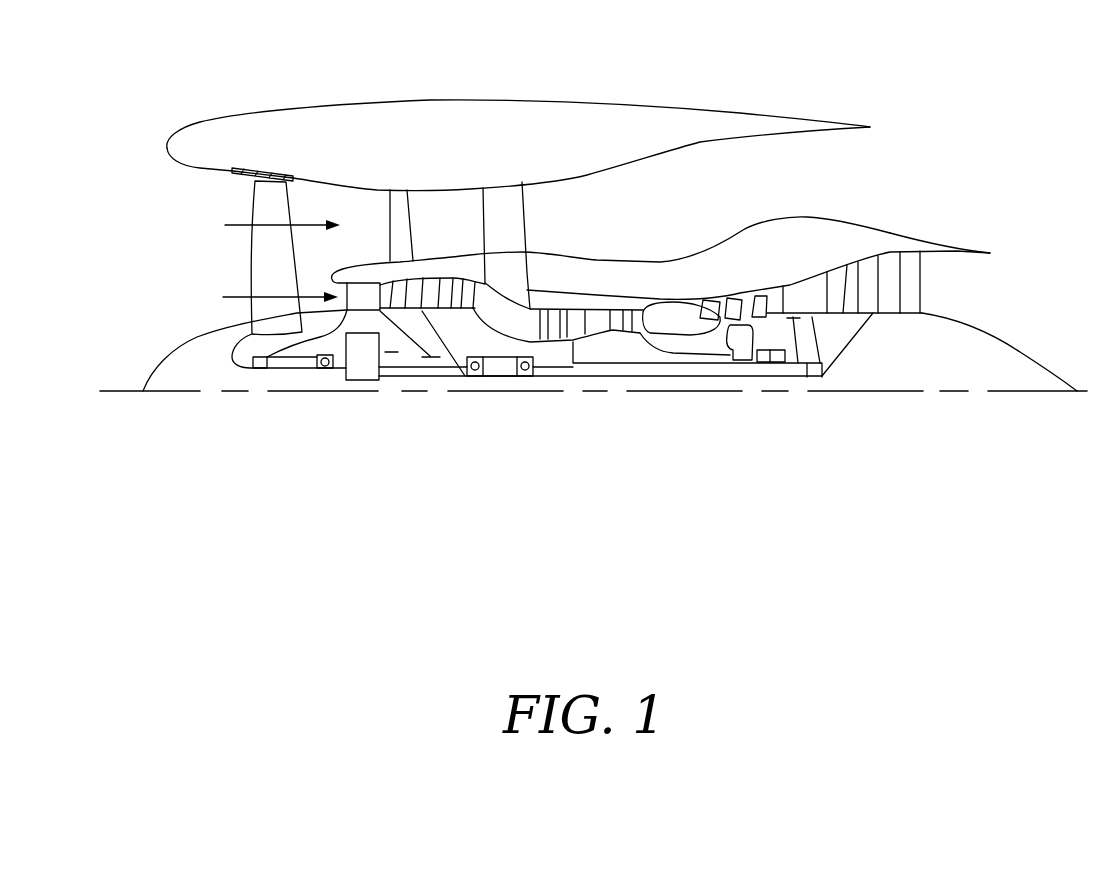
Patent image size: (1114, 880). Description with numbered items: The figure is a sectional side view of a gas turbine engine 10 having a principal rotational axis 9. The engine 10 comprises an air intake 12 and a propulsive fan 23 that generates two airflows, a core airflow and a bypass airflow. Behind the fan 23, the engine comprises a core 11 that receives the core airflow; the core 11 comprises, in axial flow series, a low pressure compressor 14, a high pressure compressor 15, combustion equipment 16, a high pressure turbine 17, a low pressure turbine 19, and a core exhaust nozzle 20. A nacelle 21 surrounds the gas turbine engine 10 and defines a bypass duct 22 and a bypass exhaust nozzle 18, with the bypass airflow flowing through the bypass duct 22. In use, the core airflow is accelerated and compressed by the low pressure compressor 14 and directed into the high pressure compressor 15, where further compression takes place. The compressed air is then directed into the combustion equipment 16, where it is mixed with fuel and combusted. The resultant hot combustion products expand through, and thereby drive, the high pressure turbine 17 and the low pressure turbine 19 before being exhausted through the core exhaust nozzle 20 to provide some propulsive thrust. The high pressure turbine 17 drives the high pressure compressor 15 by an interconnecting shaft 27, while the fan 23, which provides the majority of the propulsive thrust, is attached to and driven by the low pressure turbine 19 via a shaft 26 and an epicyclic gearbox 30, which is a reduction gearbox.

The principal rotational axis 9 is at (867, 393).
The gas turbine engine 10 is at (253, 118).
The core 11 is at (643, 280).
The air intake 12 is at (201, 200).
The low pressure compressor 14 is at (437, 288).
The high pressure compressor 15 is at (593, 323).
The combustion equipment 16 is at (675, 322).
The high pressure turbine 17 is at (742, 303).
The bypass exhaust nozzle 18 is at (862, 172).
The low pressure turbine 19 is at (890, 272).
The core exhaust nozzle 20 is at (953, 283).
The nacelle 21 is at (498, 113).
The bypass duct 22 is at (810, 186).
The propulsive fan 23 is at (257, 262).
The shaft 26 is at (590, 377).
The interconnecting shaft 27 is at (632, 360).
The epicyclic gearbox 30 is at (360, 367).